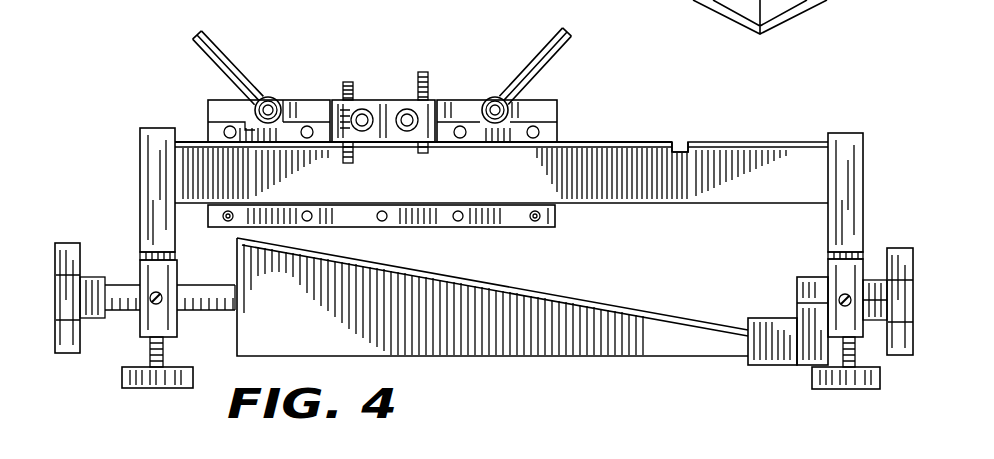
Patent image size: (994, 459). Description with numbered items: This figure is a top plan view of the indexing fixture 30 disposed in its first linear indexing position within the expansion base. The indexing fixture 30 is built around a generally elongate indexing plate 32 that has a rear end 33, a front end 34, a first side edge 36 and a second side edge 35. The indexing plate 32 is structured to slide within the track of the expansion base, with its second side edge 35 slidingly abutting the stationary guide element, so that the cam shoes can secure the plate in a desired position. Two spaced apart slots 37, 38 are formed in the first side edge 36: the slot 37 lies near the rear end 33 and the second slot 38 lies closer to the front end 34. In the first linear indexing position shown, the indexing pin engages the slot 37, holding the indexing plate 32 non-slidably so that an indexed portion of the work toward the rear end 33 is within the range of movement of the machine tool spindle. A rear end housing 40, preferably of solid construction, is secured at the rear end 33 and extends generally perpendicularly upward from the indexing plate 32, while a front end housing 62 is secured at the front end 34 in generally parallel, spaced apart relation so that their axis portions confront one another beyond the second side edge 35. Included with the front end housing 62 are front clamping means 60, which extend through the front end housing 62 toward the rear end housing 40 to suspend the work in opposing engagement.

The indexing fixture 30 is at (810, 130).
The indexing plate 32 is at (723, 165).
The rear end 33 is at (185, 160).
The front end 34 is at (823, 175).
The second side edge 35 is at (617, 208).
The first side edge 36 is at (640, 114).
The slot 37 is at (433, 152).
The second slot 38 is at (680, 147).
The rear end housing 40 is at (149, 192).
The front clamping means 60 is at (872, 262).
The front end housing 62 is at (839, 223).